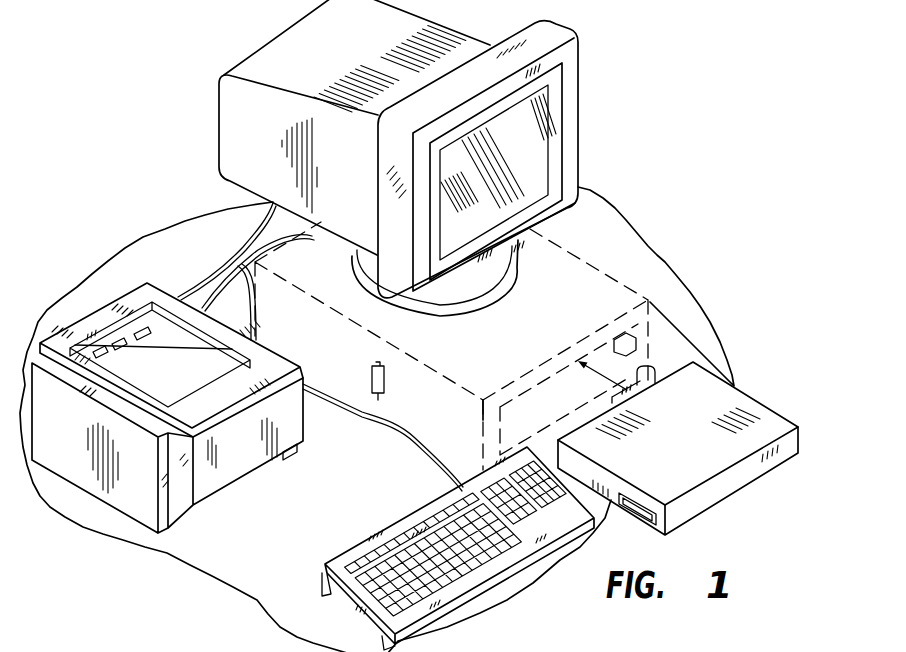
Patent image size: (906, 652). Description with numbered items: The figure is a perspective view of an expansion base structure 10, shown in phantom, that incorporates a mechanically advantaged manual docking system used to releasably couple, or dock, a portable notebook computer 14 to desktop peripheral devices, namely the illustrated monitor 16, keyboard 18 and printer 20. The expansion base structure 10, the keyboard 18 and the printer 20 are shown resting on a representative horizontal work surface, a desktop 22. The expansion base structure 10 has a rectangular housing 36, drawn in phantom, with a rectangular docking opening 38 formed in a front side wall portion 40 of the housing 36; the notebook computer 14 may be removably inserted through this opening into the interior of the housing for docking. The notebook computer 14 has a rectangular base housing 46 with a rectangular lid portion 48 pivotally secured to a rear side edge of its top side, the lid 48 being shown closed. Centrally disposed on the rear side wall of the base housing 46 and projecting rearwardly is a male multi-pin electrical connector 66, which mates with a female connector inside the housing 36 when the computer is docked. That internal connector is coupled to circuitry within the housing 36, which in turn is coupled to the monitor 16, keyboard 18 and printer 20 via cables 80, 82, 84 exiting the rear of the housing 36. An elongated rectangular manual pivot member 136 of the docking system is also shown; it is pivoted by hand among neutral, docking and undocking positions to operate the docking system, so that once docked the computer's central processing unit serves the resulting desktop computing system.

The expansion base structure 10 is at (494, 327).
The notebook computer 14 is at (712, 442).
The monitor 16 is at (589, 62).
The keyboard 18 is at (420, 508).
The printer 20 is at (230, 484).
The desktop 22 is at (336, 505).
The housing 36 is at (660, 253).
The docking opening 38 is at (550, 374).
The front side wall portion 40 is at (482, 418).
The base housing 46 is at (811, 446).
The lid portion 48 is at (809, 422).
The male multi-pin electrical connector 66 is at (653, 382).
The cable 80 is at (256, 214).
The cable 82 is at (240, 268).
The cable 84 is at (235, 245).
The manual pivot member 136 is at (374, 432).